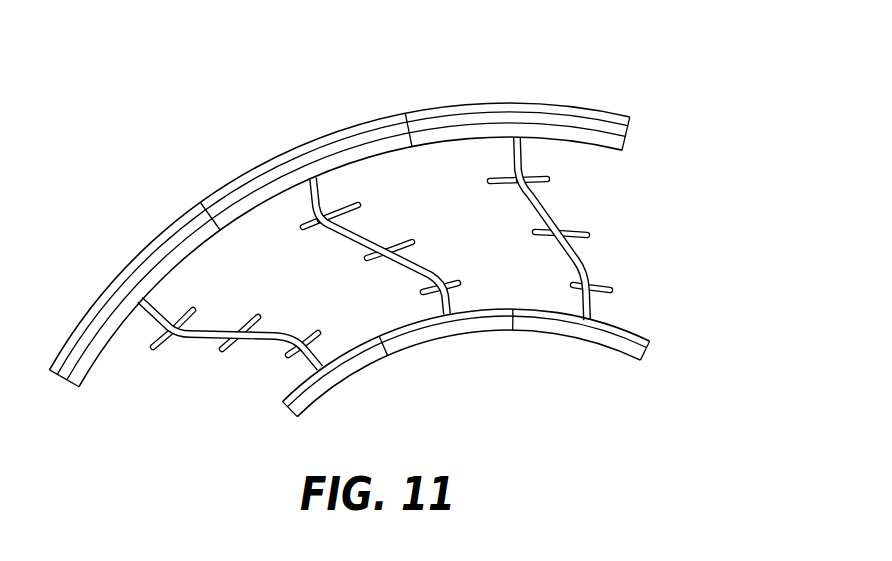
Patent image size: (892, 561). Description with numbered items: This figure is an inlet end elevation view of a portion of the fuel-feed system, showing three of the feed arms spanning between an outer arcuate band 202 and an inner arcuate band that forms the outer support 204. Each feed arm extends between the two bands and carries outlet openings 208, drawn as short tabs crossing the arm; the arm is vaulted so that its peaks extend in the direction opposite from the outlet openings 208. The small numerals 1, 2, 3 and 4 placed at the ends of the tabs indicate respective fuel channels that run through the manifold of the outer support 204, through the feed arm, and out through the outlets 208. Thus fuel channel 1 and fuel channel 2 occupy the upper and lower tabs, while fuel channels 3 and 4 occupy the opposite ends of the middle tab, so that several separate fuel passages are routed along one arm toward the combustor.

The outer arc segment 202 is at (250, 195).
The outer support 204 is at (364, 359).
The outlet openings 208 is at (418, 253).
The fuel channel 1 is at (351, 273).
The fuel channel 2 is at (451, 328).
The fuel channel 3 is at (380, 301).
The fuel channel 4 is at (422, 278).